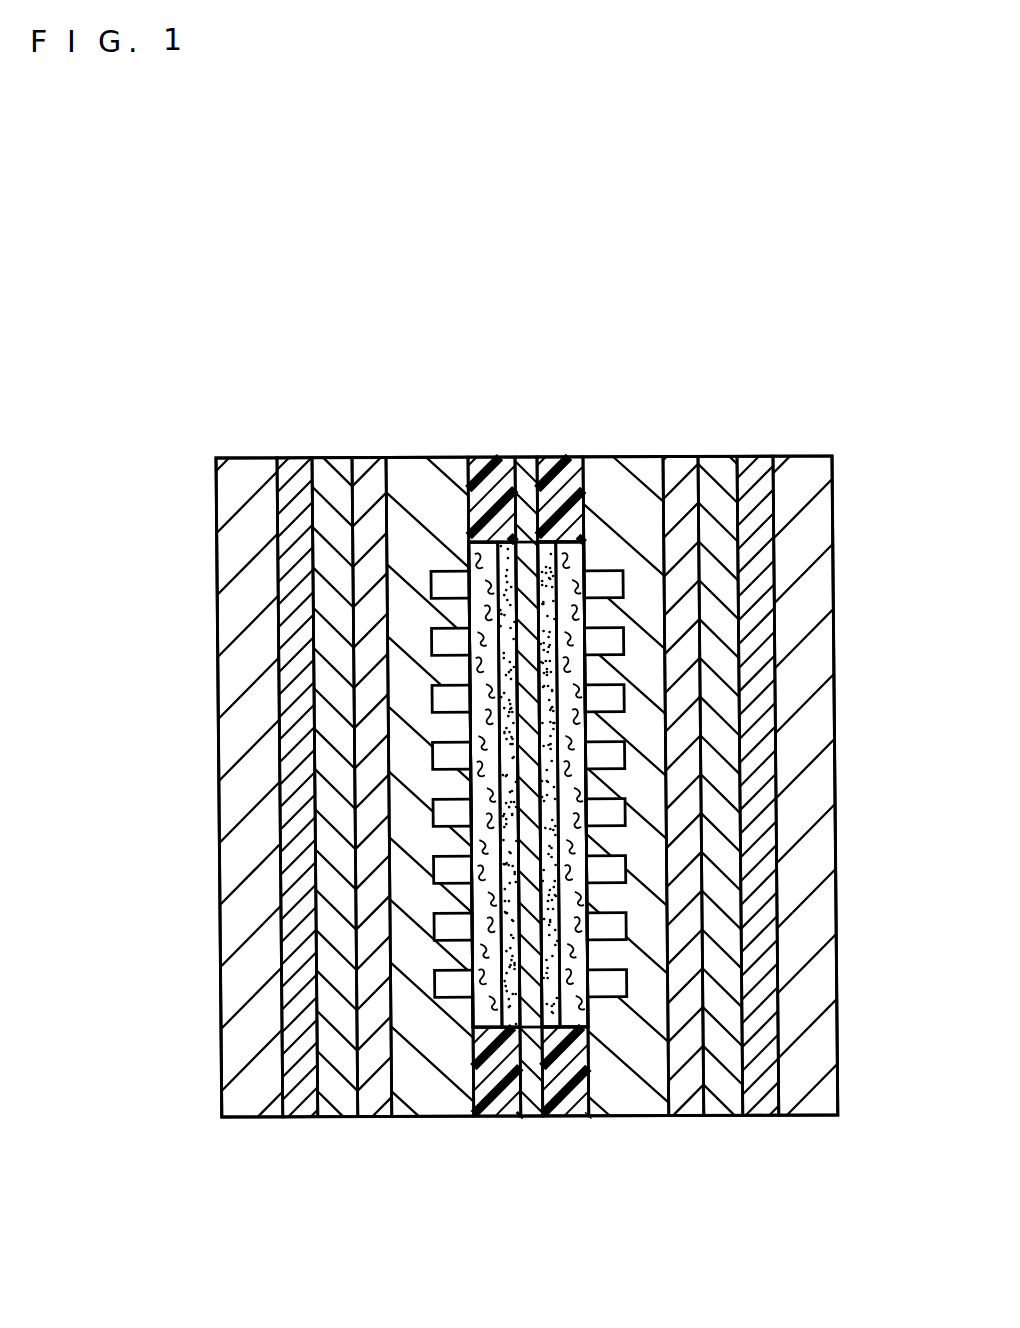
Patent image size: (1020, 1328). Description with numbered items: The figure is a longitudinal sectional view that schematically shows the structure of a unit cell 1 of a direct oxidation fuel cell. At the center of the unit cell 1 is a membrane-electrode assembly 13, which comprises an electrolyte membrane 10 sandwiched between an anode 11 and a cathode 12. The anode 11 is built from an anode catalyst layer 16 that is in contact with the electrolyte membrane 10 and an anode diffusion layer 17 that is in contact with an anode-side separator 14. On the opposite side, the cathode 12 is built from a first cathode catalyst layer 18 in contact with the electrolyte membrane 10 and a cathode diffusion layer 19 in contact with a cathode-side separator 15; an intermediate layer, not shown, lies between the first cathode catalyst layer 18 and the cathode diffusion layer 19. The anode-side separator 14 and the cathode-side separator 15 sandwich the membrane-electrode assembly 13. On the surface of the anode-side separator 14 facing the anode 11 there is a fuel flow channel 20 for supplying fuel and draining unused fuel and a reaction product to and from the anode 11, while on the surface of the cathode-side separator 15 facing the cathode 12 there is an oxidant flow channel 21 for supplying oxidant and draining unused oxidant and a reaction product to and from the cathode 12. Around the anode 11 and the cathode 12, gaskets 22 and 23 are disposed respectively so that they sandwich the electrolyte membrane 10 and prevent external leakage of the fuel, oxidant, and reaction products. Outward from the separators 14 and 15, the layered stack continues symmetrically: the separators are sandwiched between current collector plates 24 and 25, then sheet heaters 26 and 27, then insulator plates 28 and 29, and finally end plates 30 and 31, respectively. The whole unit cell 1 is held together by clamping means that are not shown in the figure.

The unit cell 1 is at (726, 233).
The electrolyte membrane 10 is at (525, 472).
The anode 11 is at (510, 373).
The cathode 12 is at (657, 373).
The membrane-electrode assembly 13 is at (647, 312).
The anode-side separator 14 is at (413, 488).
The cathode-side separator 15 is at (640, 497).
The anode catalyst layer 16 is at (505, 540).
The anode diffusion layer 17 is at (466, 518).
The first cathode catalyst layer 18 is at (548, 540).
The cathode diffusion layer 19 is at (567, 530).
The fuel flow channel 20 is at (450, 990).
The oxidant flow channel 21 is at (610, 988).
The gasket 22 is at (497, 1072).
The gasket 23 is at (566, 1078).
The current collector plate 24 is at (372, 542).
The current collector plate 25 is at (680, 542).
The sheet heater 26 is at (335, 636).
The sheet heater 27 is at (718, 635).
The insulator plate 28 is at (295, 717).
The insulator plate 29 is at (757, 715).
The end plate 30 is at (250, 798).
The end plate 31 is at (805, 805).